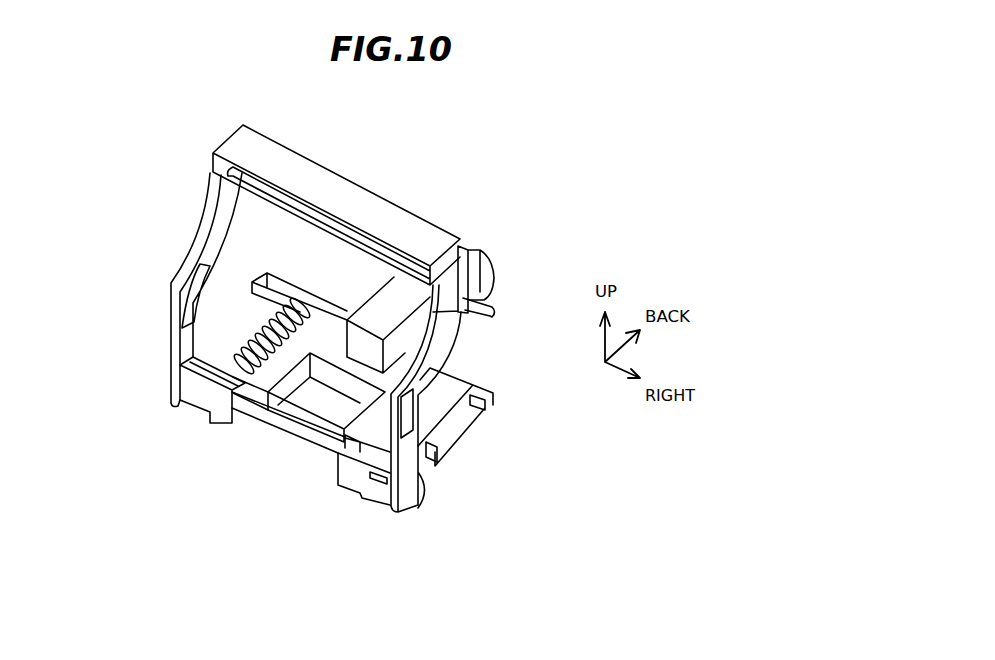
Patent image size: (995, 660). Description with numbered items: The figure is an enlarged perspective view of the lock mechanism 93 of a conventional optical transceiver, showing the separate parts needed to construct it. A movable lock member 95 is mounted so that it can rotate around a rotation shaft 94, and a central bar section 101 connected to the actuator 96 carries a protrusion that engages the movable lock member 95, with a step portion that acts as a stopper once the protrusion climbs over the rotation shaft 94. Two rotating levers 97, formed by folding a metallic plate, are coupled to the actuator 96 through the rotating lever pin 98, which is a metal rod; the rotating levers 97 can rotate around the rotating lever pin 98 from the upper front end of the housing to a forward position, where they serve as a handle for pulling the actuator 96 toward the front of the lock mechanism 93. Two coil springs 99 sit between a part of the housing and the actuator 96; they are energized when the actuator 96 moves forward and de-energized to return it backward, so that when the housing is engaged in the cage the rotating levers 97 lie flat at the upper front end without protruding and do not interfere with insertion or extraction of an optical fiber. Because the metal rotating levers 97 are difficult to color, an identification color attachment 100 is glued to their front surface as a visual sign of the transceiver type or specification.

The lock mechanism 93 is at (172, 112).
The rotation shaft 94 is at (501, 300).
The movable lock member 95 is at (490, 250).
The actuator 96 is at (480, 425).
The rotating lever 97 is at (397, 513).
The rotating lever pin 98 is at (303, 440).
The coil spring 99 is at (250, 320).
The identification color attachment 100 is at (232, 138).
The central bar section 101 is at (380, 297).